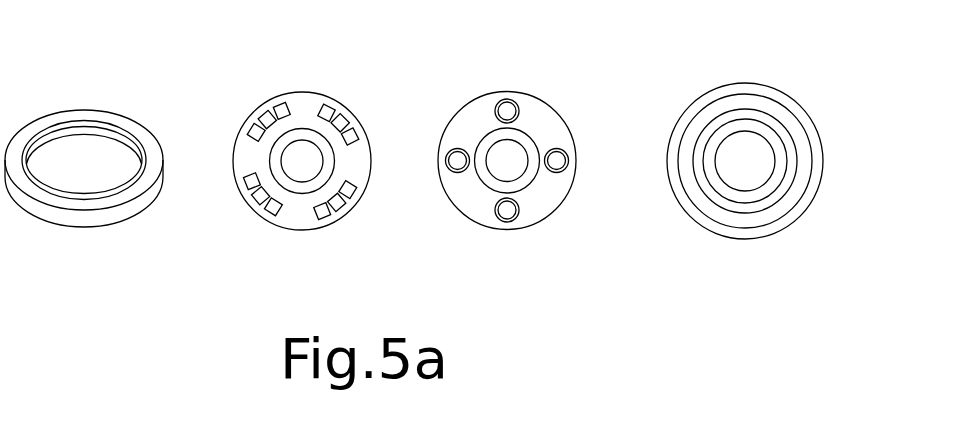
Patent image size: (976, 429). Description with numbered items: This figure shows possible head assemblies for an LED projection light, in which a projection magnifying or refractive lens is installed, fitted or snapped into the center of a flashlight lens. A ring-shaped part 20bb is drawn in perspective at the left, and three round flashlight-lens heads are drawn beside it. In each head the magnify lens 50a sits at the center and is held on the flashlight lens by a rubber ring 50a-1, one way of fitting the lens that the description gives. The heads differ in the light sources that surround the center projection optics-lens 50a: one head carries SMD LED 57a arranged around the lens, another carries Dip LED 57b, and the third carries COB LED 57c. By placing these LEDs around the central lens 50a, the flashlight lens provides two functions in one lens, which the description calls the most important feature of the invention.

The ring 20bb is at (105, 93).
The magnify lens 50a is at (303, 160).
The rubber ring 50a-1 is at (340, 162).
The SMD LED 57a is at (286, 105).
The Dip LED 57b is at (509, 108).
The COB LED 57c is at (742, 98).